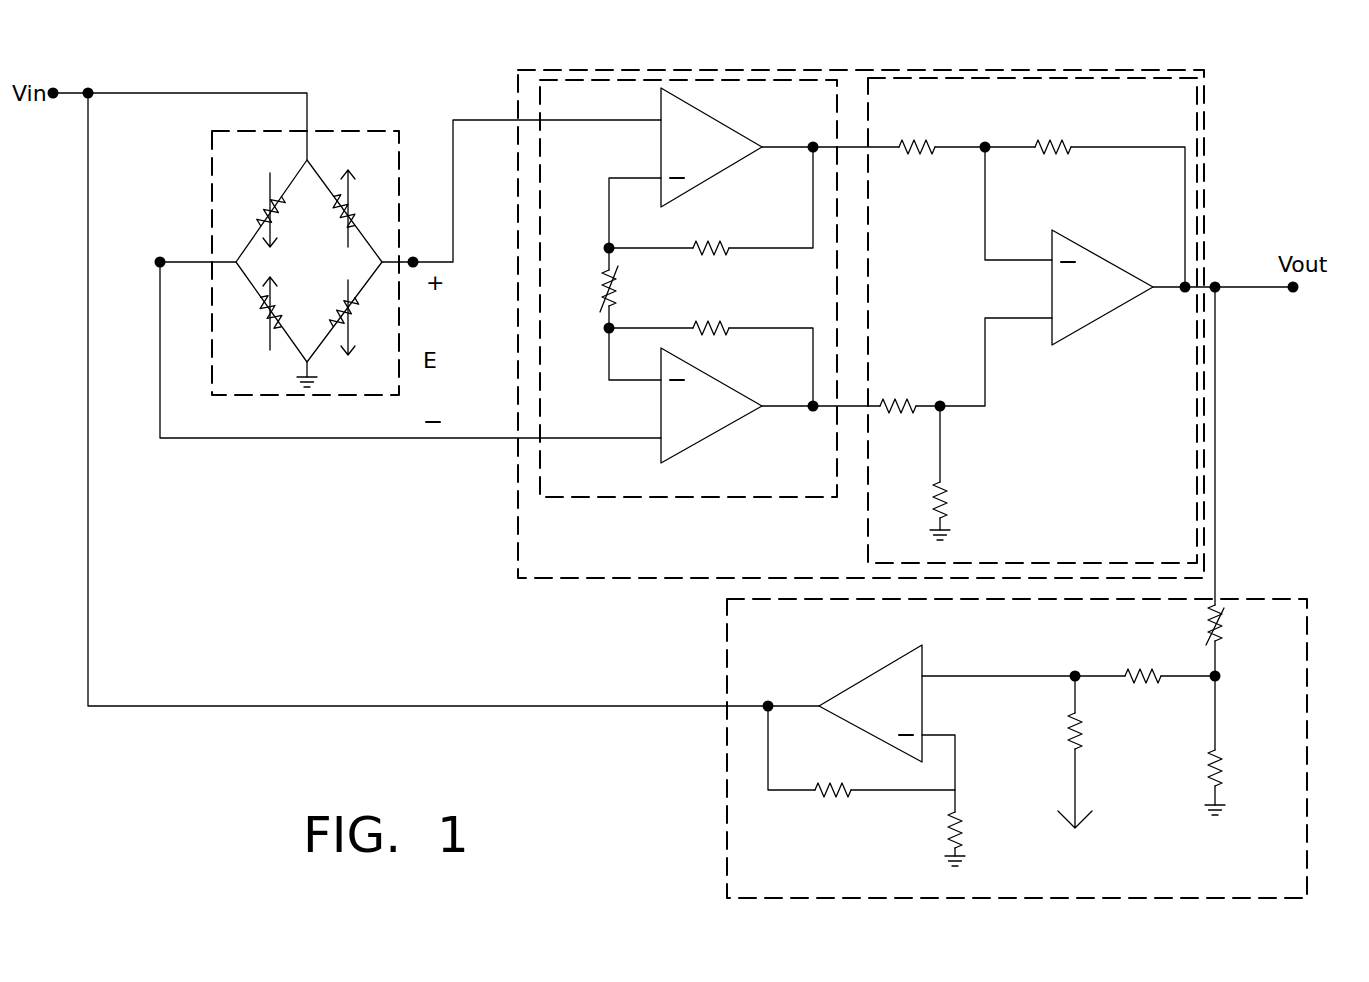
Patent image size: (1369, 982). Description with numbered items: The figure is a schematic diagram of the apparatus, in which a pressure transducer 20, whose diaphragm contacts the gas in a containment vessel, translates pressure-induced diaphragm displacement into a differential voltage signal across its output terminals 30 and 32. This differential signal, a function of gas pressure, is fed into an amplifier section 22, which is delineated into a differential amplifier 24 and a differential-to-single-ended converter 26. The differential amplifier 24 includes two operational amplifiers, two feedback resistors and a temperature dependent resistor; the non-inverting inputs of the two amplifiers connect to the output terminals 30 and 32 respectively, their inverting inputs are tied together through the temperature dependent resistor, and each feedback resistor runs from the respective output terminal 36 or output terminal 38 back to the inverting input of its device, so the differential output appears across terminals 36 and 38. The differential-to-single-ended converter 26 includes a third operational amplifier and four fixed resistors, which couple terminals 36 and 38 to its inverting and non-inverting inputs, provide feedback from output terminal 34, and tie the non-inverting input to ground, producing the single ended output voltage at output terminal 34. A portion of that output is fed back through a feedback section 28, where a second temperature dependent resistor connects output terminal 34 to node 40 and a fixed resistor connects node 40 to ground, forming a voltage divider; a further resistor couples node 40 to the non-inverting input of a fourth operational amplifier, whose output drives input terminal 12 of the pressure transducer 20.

The input terminal 12 is at (89, 92).
The pressure transducer 20 is at (348, 131).
The amplifier section 22 is at (978, 70).
The differential amplifier 24 is at (719, 307).
The differential-to-single-ended converter 26 is at (868, 545).
The feedback section 28 is at (988, 592).
The output terminal 30 is at (414, 256).
The output terminal 32 is at (154, 262).
The output terminal 34 is at (1320, 308).
The output terminal 36 is at (812, 146).
The output terminal 38 is at (812, 412).
The node 40 is at (1222, 676).